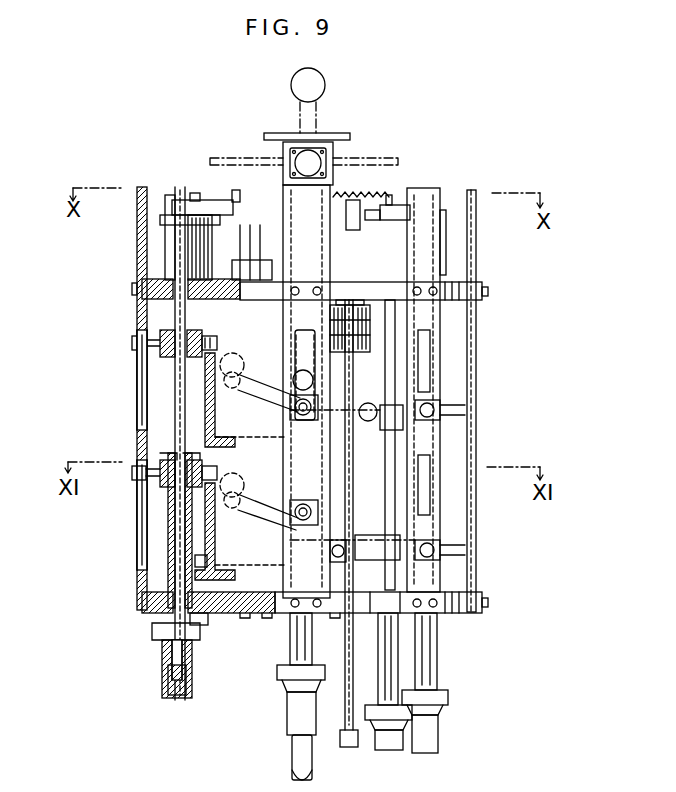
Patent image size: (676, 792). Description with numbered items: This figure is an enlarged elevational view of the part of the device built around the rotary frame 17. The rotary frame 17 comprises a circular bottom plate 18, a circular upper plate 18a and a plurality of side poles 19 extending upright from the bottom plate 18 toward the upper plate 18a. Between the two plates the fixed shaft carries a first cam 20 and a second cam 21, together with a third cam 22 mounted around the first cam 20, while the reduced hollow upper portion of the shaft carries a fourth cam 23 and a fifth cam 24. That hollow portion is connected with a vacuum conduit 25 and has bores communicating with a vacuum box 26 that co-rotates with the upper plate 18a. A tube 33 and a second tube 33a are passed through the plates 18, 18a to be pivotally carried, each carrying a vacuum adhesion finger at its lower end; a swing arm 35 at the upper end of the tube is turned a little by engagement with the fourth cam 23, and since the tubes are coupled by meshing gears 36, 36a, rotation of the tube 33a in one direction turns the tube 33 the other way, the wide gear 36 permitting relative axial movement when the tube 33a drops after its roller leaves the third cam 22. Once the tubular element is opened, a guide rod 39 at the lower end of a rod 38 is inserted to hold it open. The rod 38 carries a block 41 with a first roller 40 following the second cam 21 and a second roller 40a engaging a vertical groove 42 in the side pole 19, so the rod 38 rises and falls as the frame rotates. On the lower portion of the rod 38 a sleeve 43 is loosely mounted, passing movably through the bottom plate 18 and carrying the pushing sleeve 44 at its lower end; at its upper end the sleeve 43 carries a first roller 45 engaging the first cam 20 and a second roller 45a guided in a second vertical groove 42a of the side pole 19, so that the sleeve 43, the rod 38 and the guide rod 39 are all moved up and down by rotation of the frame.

The rotary frame 17 is at (516, 386).
The circular bottom plate 18 is at (457, 614).
The circular upper plate 18a is at (462, 283).
The side pole 19 is at (137, 248).
The first cam 20 is at (220, 510).
The second cam 21 is at (215, 392).
The third cam 22 is at (200, 613).
The fourth cam 23 is at (259, 215).
The fifth cam 24 is at (218, 158).
The vacuum conduit 25 is at (325, 85).
The vacuum box 26 is at (273, 245).
The tube 33 is at (340, 715).
The tube 33a is at (363, 378).
The swing arm 35 is at (200, 200).
The gear 36 is at (330, 315).
The gear 36a is at (330, 330).
The rod 38 is at (178, 540).
The guide rod 39 is at (168, 685).
The first roller 40 is at (208, 340).
The second roller 40a is at (132, 343).
The block 41 is at (170, 357).
The vertical groove 42 is at (137, 360).
The second vertical groove 42a is at (137, 523).
The sleeve 43 is at (170, 558).
The pushing sleeve 44 is at (162, 655).
The first roller 45 is at (208, 472).
The second roller 45a is at (132, 474).